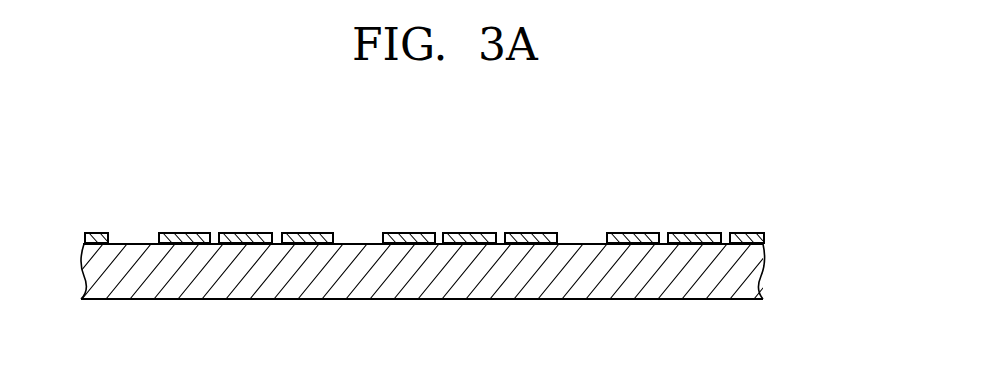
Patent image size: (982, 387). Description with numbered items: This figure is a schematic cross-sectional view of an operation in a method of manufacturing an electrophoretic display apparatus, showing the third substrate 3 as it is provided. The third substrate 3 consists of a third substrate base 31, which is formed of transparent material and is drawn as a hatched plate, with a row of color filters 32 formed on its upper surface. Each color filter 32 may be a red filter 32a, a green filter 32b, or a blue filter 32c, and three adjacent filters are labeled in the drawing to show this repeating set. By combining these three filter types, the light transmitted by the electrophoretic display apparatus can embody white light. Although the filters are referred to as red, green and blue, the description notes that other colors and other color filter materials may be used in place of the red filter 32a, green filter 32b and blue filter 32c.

The third substrate 3 is at (789, 222).
The third substrate base 31 is at (758, 271).
The color filters 32 is at (415, 172).
The red filter 32a is at (409, 231).
The green filter 32b is at (473, 231).
The blue filter 32c is at (536, 231).